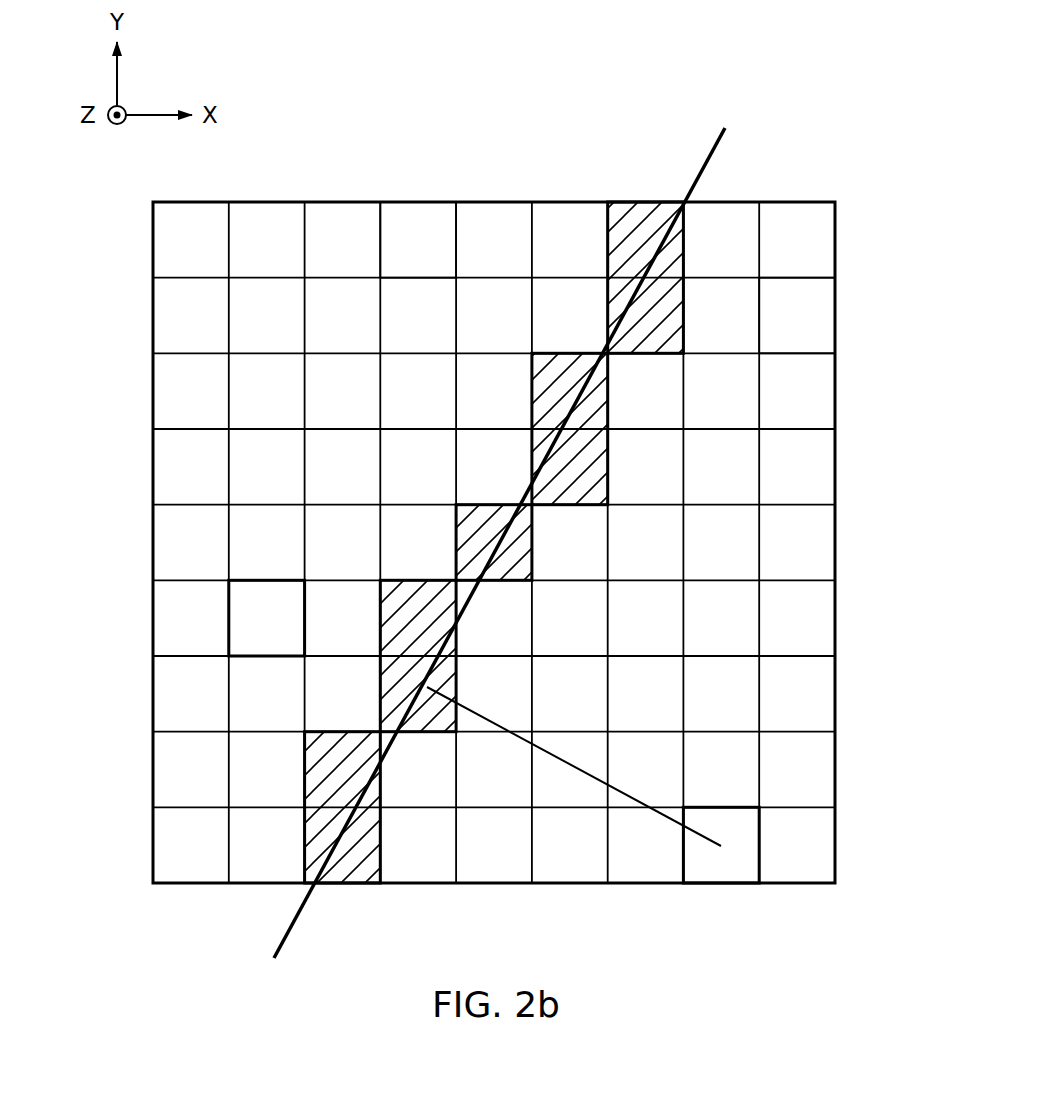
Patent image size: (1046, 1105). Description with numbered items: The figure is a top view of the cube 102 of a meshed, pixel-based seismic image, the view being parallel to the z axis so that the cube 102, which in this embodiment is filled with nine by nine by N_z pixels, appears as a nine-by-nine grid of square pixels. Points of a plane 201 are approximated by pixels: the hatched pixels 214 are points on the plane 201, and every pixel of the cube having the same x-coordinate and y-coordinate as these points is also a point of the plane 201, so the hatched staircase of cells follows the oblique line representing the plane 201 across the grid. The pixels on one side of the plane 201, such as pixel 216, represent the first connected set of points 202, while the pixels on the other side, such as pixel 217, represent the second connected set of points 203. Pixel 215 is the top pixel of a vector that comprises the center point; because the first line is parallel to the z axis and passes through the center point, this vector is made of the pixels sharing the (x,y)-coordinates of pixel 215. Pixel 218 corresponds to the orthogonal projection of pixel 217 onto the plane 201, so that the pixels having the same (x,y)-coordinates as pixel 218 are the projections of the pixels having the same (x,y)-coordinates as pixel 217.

The cube 102 is at (285, 200).
The plane 201 is at (697, 178).
The first connected set of points 202 is at (408, 243).
The second connected set of points 203 is at (805, 328).
The hatched pixels 214 is at (350, 852).
The pixel (top pixel of the vector comprising the center point) 215 is at (482, 525).
The pixel 216 is at (262, 620).
The pixel 217 is at (731, 858).
The pixel (orthogonal projection) 218 is at (393, 692).